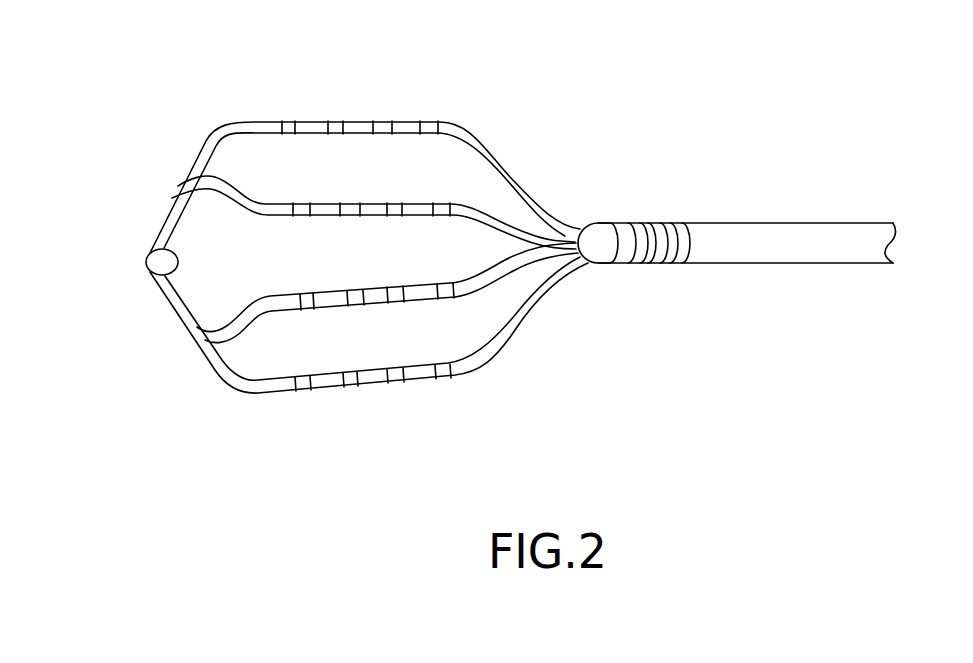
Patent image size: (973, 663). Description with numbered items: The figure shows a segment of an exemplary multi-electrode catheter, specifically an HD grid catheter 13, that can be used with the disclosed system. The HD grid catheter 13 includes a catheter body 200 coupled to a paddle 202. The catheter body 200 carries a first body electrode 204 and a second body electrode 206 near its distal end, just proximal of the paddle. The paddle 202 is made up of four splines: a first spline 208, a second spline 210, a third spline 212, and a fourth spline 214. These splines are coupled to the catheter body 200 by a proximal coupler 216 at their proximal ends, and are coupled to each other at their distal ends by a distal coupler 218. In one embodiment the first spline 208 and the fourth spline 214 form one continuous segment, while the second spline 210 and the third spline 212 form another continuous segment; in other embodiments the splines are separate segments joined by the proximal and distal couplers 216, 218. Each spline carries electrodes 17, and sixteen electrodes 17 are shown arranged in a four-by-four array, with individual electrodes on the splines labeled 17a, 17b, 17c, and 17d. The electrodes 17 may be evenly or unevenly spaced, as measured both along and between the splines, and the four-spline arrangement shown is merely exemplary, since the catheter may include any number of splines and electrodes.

The HD grid catheter 13 is at (862, 128).
The electrodes 17 is at (348, 385).
The electrode 17a is at (293, 122).
The electrode 17b is at (331, 136).
The electrode 17c is at (300, 218).
The electrode 17d is at (352, 218).
The catheter body 200 is at (868, 261).
The paddle 202 is at (195, 108).
The first body electrode 204 is at (680, 225).
The second body electrode 206 is at (636, 230).
The first spline 208 is at (463, 132).
The second spline 210 is at (203, 186).
The third spline 212 is at (204, 333).
The fourth spline 214 is at (268, 386).
The proximal coupler 216 is at (592, 232).
The distal coupler 218 is at (165, 262).